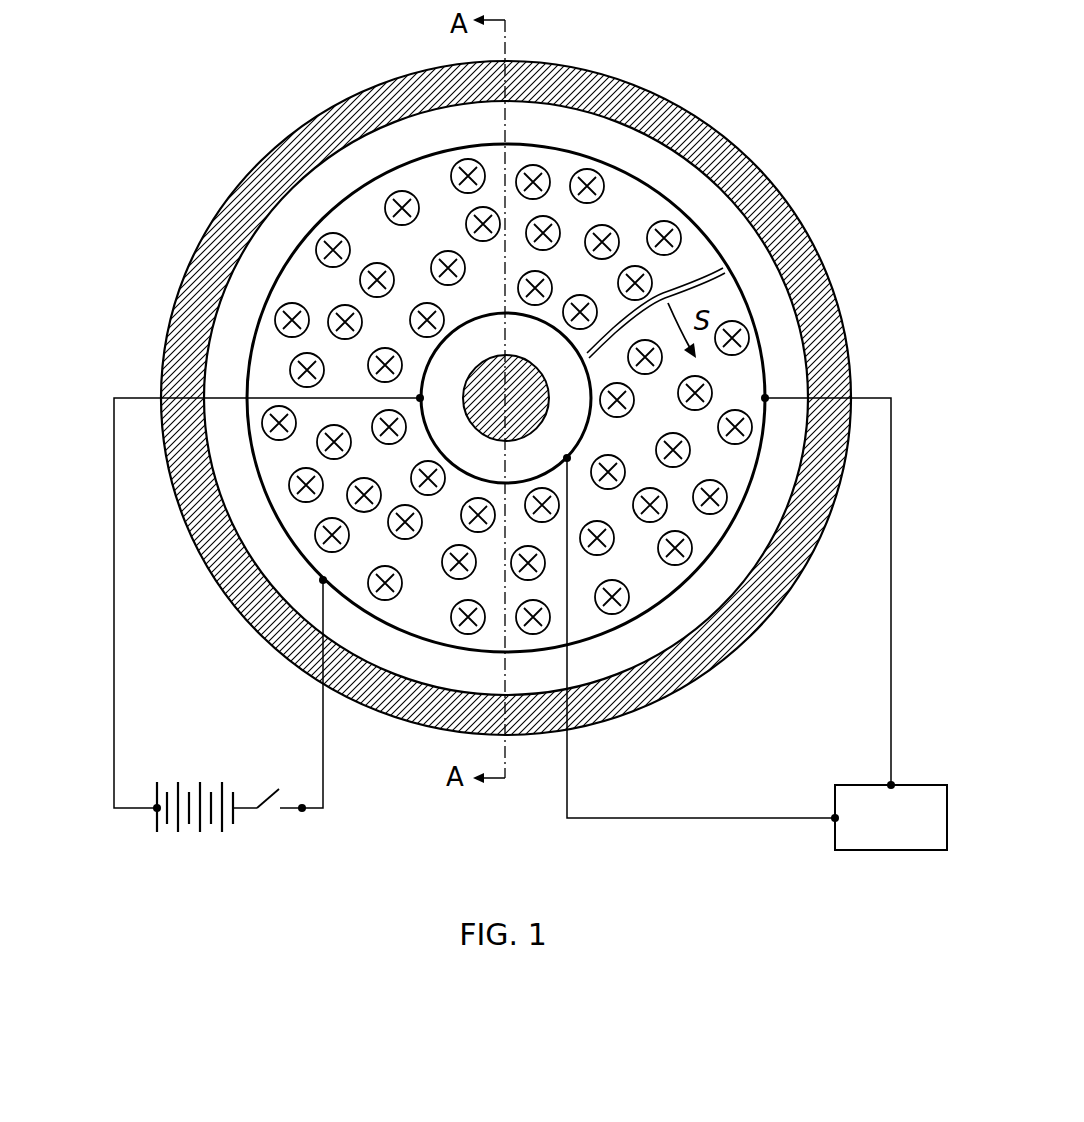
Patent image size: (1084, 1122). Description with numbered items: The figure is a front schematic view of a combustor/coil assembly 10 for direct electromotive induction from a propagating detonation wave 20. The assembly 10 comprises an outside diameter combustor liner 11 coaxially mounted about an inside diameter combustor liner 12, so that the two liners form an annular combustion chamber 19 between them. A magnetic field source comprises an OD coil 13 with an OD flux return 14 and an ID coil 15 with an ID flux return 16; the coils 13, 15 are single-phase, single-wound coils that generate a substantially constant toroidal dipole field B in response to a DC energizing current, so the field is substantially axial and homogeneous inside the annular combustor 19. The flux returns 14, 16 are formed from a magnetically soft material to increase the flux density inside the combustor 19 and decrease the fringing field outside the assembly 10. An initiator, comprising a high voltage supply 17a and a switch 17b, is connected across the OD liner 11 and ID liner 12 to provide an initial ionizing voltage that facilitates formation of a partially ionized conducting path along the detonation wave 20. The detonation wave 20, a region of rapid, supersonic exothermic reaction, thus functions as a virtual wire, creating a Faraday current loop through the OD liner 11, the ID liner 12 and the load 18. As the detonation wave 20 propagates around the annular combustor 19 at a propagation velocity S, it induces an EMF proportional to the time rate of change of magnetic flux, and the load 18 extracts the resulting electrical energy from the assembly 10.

The combustor/coil assembly 10 is at (93, 58).
The outside diameter combustor liner 11 is at (334, 214).
The inside diameter combustor liner 12 is at (490, 315).
The OD coil 13 is at (491, 137).
The OD flux return 14 is at (610, 82).
The ID coil 15 is at (491, 472).
The ID flux return 16 is at (483, 373).
The high voltage supply 17a is at (157, 820).
The switch 17b is at (273, 826).
The load 18 is at (833, 836).
The annular combustion chamber 19 is at (302, 285).
The detonation wave 20 is at (690, 258).